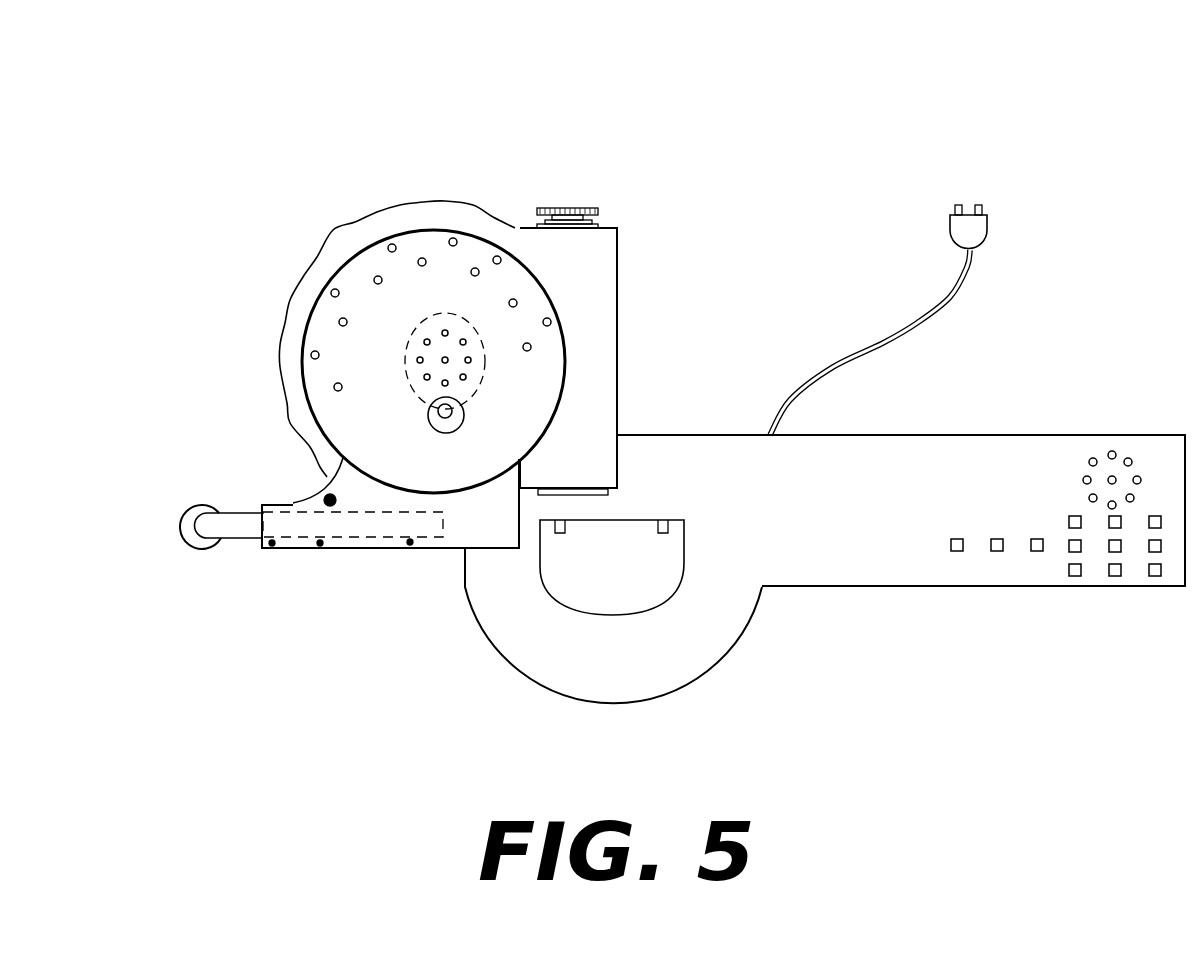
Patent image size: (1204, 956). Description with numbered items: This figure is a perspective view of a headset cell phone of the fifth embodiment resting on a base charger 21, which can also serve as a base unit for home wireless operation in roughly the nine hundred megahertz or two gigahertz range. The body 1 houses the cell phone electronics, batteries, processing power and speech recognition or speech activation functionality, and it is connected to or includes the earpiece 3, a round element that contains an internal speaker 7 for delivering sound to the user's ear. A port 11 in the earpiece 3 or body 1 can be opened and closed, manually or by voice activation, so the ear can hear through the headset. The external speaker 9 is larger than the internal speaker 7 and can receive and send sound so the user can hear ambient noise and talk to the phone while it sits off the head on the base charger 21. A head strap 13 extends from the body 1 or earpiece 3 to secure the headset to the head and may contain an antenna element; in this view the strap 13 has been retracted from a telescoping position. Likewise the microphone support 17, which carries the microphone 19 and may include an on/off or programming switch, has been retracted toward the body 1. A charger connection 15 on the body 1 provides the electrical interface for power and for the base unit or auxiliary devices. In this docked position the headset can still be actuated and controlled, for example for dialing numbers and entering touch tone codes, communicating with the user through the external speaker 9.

The body 1 is at (593, 277).
The earpiece 3 is at (378, 257).
The internal speaker 7 is at (483, 345).
The external speaker 9 is at (327, 373).
The port 11 is at (445, 421).
The head strap 13 is at (563, 208).
The charger connection 15 is at (592, 408).
The microphone support 17 is at (297, 543).
The microphone 19 is at (195, 549).
The base charger 21 is at (1010, 462).